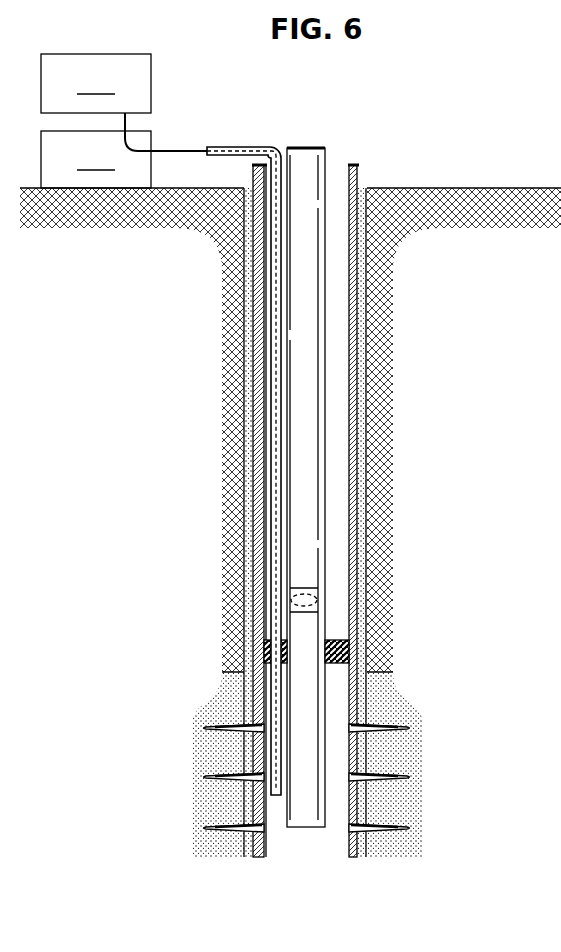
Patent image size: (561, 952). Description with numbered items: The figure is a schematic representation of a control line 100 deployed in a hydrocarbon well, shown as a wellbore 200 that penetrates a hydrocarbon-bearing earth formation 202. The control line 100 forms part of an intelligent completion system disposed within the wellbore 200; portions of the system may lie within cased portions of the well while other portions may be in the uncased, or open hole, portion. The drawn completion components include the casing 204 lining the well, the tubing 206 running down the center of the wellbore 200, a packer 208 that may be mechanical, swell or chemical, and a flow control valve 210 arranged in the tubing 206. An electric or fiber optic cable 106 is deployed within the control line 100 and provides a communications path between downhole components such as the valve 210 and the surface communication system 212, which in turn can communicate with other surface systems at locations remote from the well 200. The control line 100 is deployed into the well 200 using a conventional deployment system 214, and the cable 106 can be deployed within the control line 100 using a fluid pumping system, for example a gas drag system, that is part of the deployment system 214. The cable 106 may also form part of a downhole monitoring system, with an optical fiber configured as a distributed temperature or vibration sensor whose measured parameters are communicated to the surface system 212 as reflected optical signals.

The control line 100 is at (233, 147).
The electric or fiber optic cable 106 is at (191, 148).
The wellbore 200 is at (237, 392).
The hydrocarbon-bearing earth formation 202 is at (236, 813).
The casing 204 is at (360, 302).
The tubing 206 is at (310, 418).
The packer 208 is at (340, 640).
The flow control valve 210 is at (323, 597).
The surface communication system 212 is at (96, 83).
The deployment system 214 is at (96, 159).